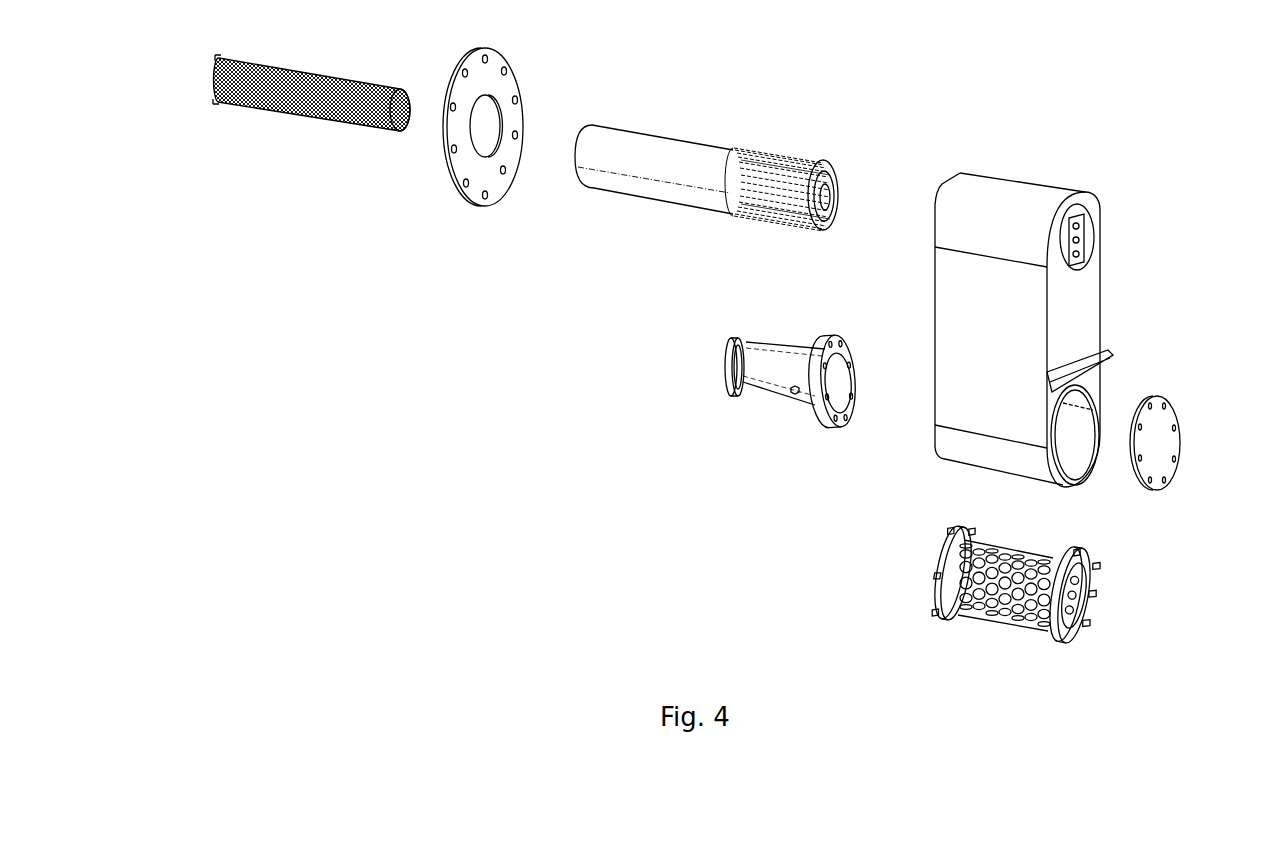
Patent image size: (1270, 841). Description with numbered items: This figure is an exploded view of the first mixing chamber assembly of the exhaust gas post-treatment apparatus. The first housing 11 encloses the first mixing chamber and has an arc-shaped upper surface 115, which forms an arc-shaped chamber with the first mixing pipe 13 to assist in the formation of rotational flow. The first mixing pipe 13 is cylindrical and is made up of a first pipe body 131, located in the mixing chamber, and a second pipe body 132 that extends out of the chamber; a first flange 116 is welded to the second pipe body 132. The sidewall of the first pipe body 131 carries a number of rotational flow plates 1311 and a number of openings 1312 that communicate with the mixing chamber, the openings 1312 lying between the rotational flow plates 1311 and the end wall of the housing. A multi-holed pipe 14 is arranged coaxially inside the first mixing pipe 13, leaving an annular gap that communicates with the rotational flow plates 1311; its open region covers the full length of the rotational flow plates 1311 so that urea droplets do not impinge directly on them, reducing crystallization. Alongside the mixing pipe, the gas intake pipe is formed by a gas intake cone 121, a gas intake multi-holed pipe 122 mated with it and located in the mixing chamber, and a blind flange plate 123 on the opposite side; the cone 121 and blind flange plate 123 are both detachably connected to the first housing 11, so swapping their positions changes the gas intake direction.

The first housing 11 is at (1063, 308).
The first mixing pipe 13 is at (688, 155).
The multi-holed pipe 14 is at (305, 103).
The upper surface 115 is at (1007, 195).
The first flange 116 is at (512, 88).
The gas intake cone 121 is at (782, 395).
The gas intake multi-holed pipe 122 is at (1018, 563).
The blind flange plate 123 is at (1170, 445).
The first pipe body 131 is at (809, 209).
The second pipe body 132 is at (600, 130).
The rotational flow plates 1311 is at (772, 218).
The openings 1312 is at (832, 217).